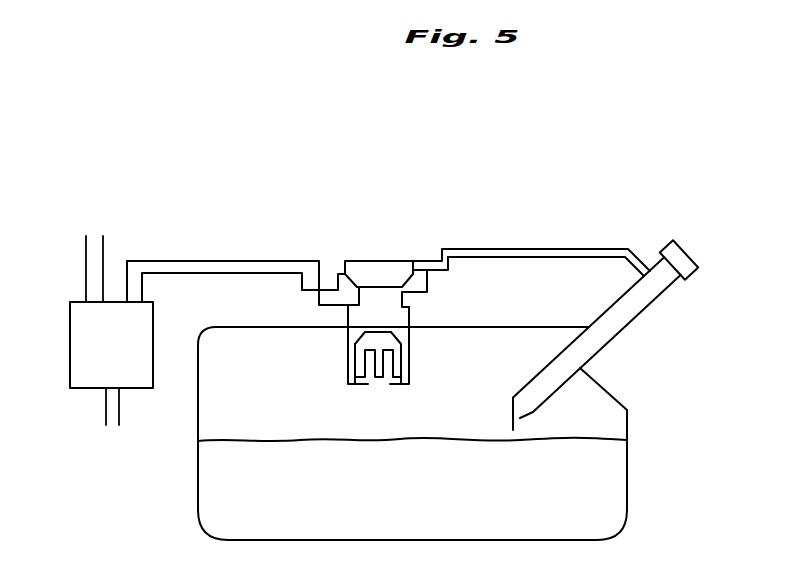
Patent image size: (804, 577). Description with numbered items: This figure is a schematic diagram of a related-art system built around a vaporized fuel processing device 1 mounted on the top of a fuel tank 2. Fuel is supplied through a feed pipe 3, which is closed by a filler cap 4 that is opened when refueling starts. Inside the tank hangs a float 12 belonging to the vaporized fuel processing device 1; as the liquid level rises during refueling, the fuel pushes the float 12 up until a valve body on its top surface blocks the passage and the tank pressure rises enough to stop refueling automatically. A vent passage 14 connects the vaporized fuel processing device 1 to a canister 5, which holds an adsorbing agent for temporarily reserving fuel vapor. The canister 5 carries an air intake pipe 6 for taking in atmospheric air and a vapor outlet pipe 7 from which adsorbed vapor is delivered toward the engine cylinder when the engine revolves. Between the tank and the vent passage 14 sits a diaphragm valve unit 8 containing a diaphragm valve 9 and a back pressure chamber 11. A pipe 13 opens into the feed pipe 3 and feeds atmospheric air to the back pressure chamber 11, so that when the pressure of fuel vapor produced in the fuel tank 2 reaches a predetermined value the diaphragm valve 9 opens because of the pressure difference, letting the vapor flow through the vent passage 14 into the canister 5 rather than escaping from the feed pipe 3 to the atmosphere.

The vaporized fuel processing device 1 is at (182, 247).
The fuel tank 2 is at (627, 418).
The feed pipe 3 is at (642, 312).
The filler cap 4 is at (681, 248).
The canister 5 is at (103, 360).
The air intake pipe 6 is at (104, 414).
The vapor outlet pipe 7 is at (84, 249).
The diaphragm valve unit 8 is at (350, 261).
The diaphragm valve 9 is at (377, 285).
The back pressure chamber 11 is at (400, 267).
The float 12 is at (348, 377).
The pipe 13 is at (555, 250).
The vent passage 14 is at (240, 262).